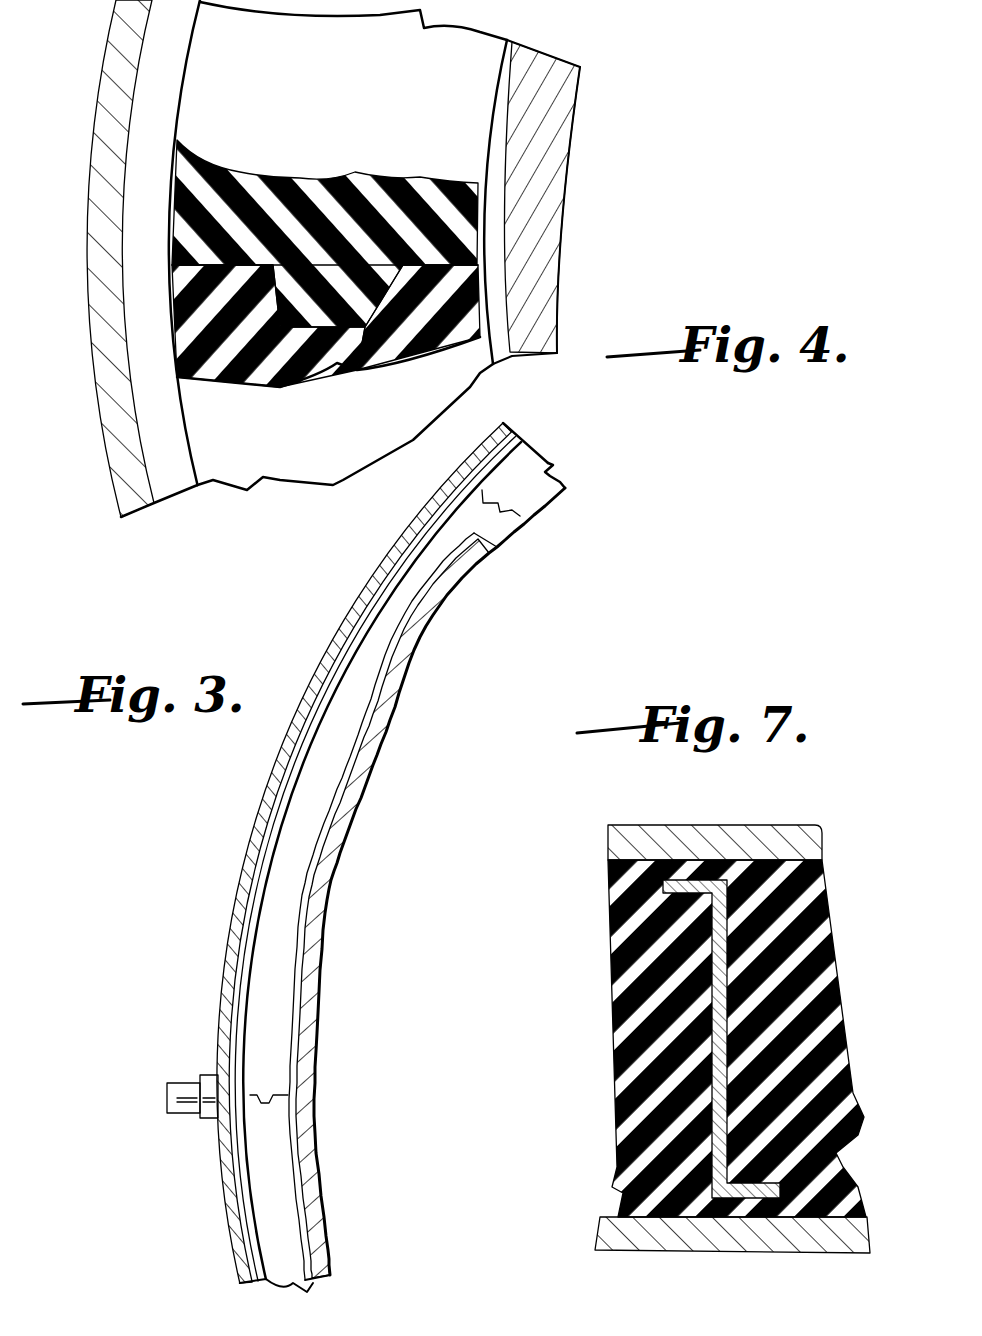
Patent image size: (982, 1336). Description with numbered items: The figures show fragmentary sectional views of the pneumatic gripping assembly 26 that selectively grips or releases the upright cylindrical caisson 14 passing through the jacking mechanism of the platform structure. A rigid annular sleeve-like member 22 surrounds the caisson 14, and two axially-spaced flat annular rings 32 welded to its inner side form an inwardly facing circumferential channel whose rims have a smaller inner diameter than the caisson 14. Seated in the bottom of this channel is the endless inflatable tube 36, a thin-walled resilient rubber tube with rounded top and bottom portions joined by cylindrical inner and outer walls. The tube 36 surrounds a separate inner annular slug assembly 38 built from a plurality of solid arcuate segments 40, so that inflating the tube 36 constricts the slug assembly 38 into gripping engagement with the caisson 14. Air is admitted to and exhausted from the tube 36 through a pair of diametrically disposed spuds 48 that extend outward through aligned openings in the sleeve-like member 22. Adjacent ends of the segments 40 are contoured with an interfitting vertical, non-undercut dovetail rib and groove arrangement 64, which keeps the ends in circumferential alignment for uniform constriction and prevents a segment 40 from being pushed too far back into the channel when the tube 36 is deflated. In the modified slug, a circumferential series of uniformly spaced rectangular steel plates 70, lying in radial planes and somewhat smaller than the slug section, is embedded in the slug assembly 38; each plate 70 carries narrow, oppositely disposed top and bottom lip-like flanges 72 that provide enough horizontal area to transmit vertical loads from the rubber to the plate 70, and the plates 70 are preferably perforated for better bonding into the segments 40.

In FIG. 4, the caisson 14 is at (517, 102).
In FIG. 3, the caisson 14 is at (360, 777).
In FIG. 4, the sleeve-like member 22 is at (82, 418).
In FIG. 3, the sleeve-like member 22 is at (227, 973).
In FIG. 4, the pneumatic gripping assembly 26 is at (500, 330).
In FIG. 3, the pneumatic gripping assembly 26 is at (340, 855).
In FIG. 7, the flat annular ring 32 is at (733, 827).
In FIG. 4, the inflatable tube 36 is at (137, 452).
In FIG. 3, the inflatable tube 36 is at (250, 860).
In FIG. 4, the slug assembly 38 is at (494, 160).
In FIG. 3, the slug assembly 38 is at (248, 913).
In FIG. 7, the slug assembly 38 is at (596, 1162).
In FIG. 4, the arcuate segment 40 is at (467, 132).
In FIG. 3, the arcuate segment 40 is at (273, 1133).
In FIG. 3, the spud 48 is at (180, 1082).
In FIG. 4, the dovetail rib and groove arrangement 64 is at (273, 350).
In FIG. 3, the dovetail rib and groove arrangement 64 is at (492, 540).
In FIG. 7, the steel plate 70 is at (683, 1213).
In FIG. 7, the lip-like flange 72 is at (688, 880).